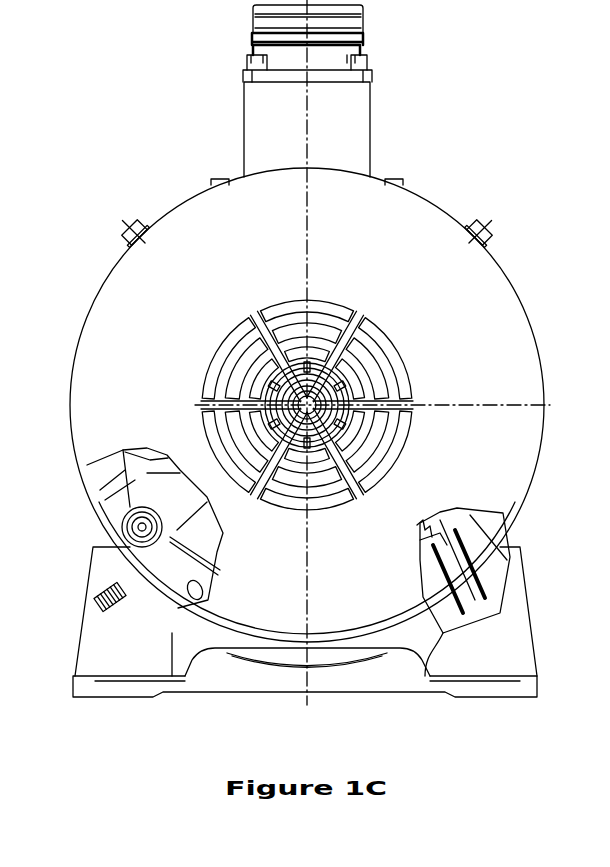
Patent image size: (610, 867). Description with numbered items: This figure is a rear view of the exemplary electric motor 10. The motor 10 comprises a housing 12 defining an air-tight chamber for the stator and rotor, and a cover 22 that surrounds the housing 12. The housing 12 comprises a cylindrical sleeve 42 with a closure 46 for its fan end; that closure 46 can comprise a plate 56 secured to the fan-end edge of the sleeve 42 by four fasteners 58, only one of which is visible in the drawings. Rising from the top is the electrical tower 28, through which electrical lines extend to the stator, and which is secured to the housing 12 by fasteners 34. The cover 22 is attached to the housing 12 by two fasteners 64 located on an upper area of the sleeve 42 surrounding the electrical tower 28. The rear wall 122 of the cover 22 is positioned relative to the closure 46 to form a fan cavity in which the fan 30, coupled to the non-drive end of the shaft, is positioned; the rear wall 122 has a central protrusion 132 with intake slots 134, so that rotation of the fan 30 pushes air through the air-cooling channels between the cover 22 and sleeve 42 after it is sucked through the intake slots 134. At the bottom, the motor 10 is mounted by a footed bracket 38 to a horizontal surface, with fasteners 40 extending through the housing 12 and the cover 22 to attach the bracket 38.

The electric motor 10 is at (331, 323).
The housing 12 is at (173, 556).
The cover 22 is at (403, 120).
The electrical tower 28 is at (363, 112).
The fan 30 is at (128, 556).
The fasteners 34 is at (222, 178).
The footed bracket 38 is at (107, 683).
The fasteners 40 is at (108, 610).
The cylindrical sleeve 42 is at (113, 460).
The closure 46 is at (172, 496).
The plate 56 is at (125, 515).
The fasteners 58 is at (165, 617).
The fasteners 64 is at (137, 222).
The rear wall 122 is at (498, 336).
The central protrusion 132 is at (408, 313).
The intake slots 134 is at (400, 430).